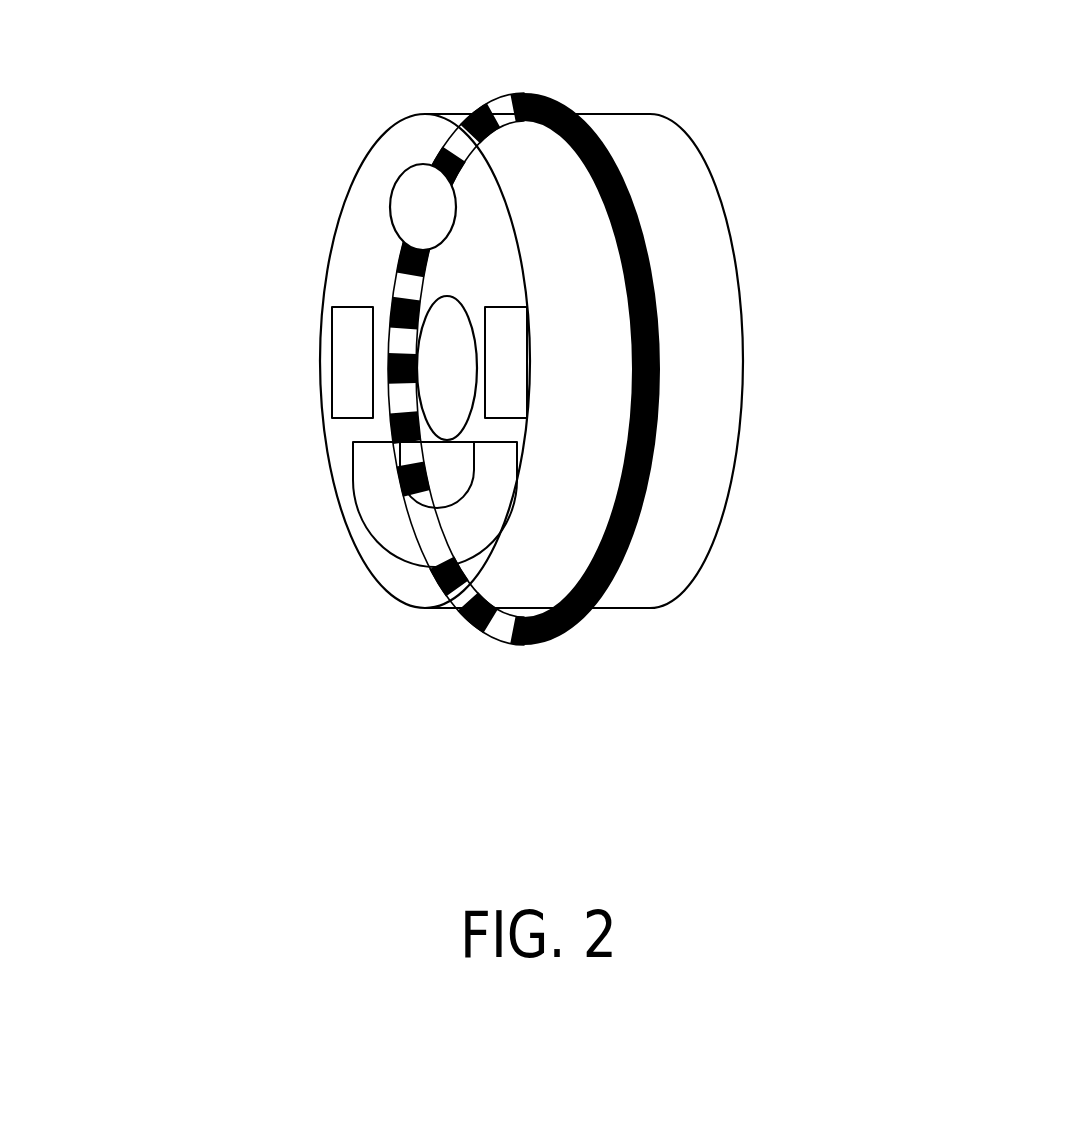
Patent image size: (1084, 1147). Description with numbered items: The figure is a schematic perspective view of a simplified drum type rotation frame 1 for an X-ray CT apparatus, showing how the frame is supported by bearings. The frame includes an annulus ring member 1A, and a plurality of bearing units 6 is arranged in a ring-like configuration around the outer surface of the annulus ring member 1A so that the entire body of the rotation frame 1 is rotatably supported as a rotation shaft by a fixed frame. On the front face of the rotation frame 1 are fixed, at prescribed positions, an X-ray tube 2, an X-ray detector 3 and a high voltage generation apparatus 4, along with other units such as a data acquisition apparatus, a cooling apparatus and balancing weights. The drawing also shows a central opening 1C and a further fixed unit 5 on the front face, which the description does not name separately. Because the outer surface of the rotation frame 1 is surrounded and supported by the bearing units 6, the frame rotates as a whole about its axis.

The drum type rotation frame 1 is at (757, 277).
The annulus ring member 1A is at (665, 173).
The center shaft hole 1C is at (430, 338).
The X-ray tube 2 is at (390, 182).
The X-ray detector 3 is at (423, 537).
The high voltage generation apparatus 4 is at (347, 380).
The right rectangular recess 5 is at (512, 378).
The bearing units 6 is at (643, 503).